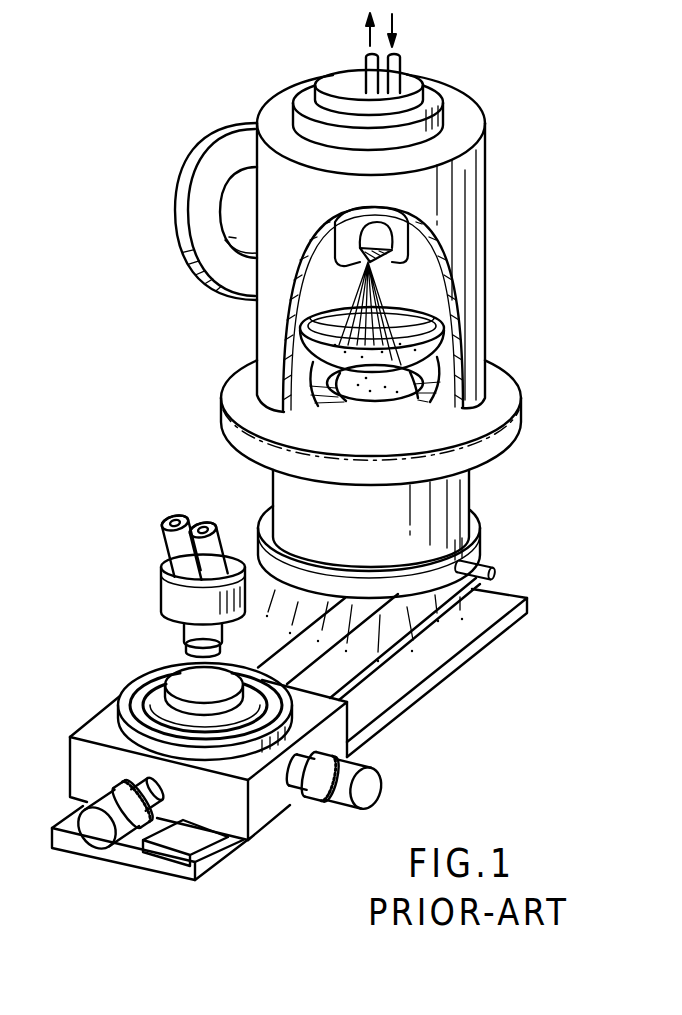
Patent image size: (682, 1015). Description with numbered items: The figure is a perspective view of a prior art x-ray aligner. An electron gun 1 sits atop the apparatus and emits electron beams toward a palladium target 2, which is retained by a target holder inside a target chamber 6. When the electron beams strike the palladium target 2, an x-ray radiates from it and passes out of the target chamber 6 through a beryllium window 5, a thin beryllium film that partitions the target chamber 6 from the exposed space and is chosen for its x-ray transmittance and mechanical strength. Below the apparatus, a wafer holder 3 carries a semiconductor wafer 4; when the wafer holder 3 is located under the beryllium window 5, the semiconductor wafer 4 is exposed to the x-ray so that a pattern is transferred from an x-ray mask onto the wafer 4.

The electron gun 1 is at (306, 387).
The palladium target 2 is at (381, 264).
The wafer holder 3 is at (84, 724).
The semiconductor wafer 4 is at (160, 674).
The beryllium window 5 is at (437, 388).
The target chamber 6 is at (335, 293).